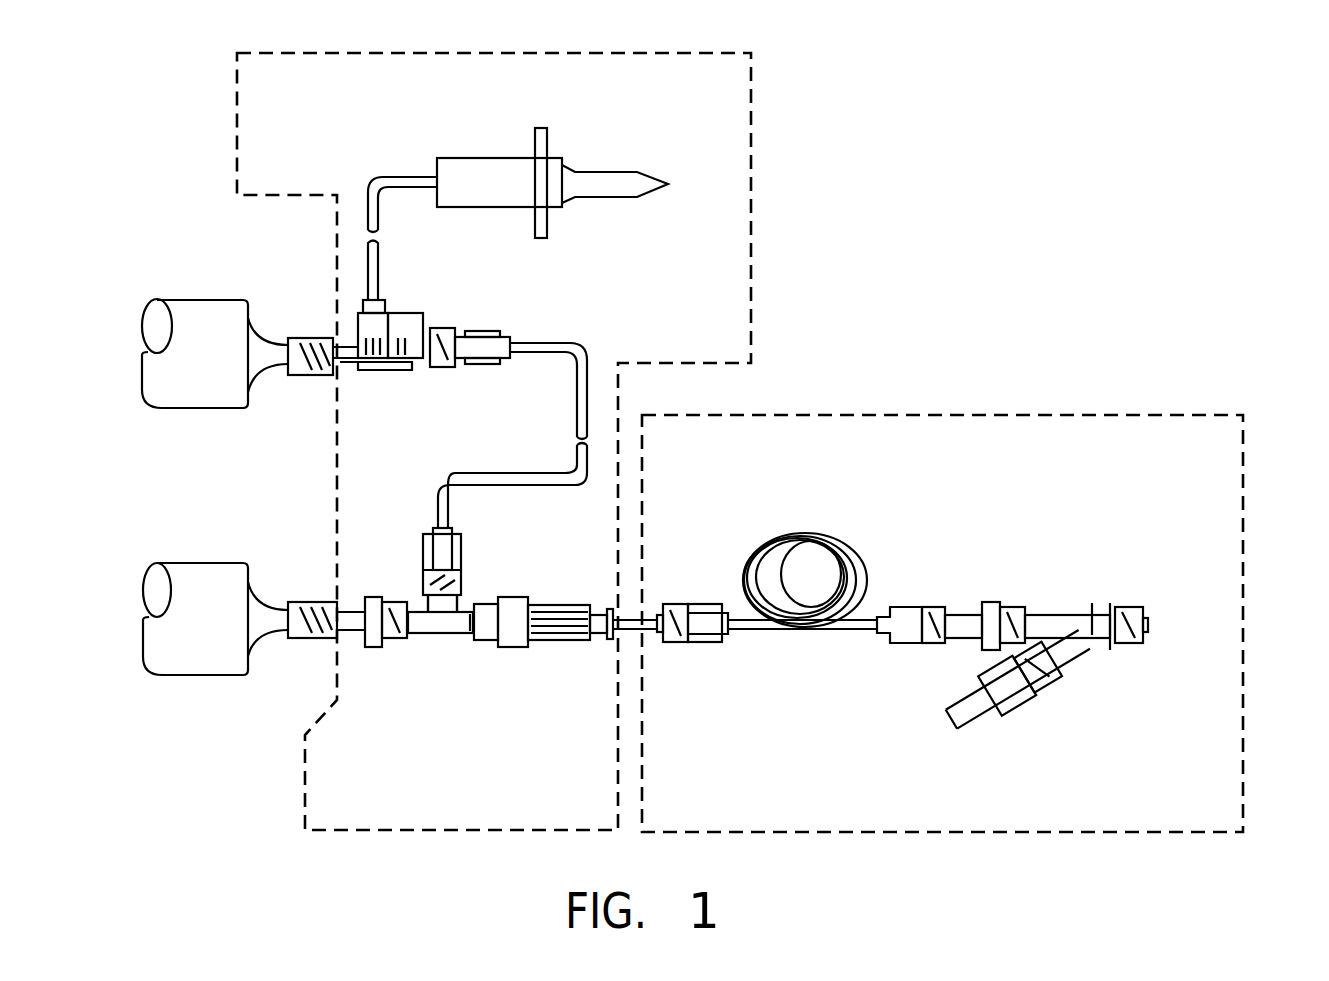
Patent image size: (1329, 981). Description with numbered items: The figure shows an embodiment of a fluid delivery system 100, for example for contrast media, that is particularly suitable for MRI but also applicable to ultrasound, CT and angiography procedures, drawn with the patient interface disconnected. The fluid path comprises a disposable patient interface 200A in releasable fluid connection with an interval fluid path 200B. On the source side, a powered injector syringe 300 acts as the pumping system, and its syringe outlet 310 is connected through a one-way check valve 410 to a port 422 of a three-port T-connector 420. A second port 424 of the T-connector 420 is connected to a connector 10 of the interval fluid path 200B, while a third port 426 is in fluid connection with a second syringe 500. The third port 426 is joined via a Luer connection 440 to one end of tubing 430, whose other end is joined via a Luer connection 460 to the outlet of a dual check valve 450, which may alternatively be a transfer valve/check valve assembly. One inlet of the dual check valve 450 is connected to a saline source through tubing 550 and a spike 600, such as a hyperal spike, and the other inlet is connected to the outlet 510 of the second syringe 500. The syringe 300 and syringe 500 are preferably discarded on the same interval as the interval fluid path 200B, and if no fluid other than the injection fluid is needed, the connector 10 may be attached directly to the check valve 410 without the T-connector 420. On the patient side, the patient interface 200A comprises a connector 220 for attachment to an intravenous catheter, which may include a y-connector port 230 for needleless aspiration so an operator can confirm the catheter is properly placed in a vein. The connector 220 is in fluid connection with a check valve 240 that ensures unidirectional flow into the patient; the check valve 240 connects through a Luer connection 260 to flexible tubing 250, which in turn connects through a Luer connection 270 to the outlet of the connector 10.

The fluid delivery system 100 is at (820, 80).
The disposable patient interface 200A is at (1241, 834).
The interval fluid path 200B is at (712, 247).
The connector 10 is at (550, 600).
The syringe 300 is at (178, 562).
The syringe outlet 310 is at (285, 645).
The one-way check valve 410 is at (369, 657).
The three-port T-connector 420 is at (442, 640).
The port 422 is at (413, 642).
The second port 424 is at (478, 645).
The third port 426 is at (459, 610).
The tubing 430 is at (592, 340).
The Luer connection 440 is at (423, 546).
The dual check valve 450 is at (426, 312).
The Luer connection 460 is at (505, 335).
The second syringe 500 is at (177, 290).
The outlet 510 is at (281, 335).
The tubing 550 is at (364, 180).
The spike 600 is at (600, 165).
The flexible tubing 250 is at (798, 530).
The Luer connection 260 is at (898, 602).
The Luer connection 270 is at (700, 648).
The check valve 240 is at (996, 598).
The connector 220 is at (1060, 615).
The y-connector port 230 is at (1050, 706).